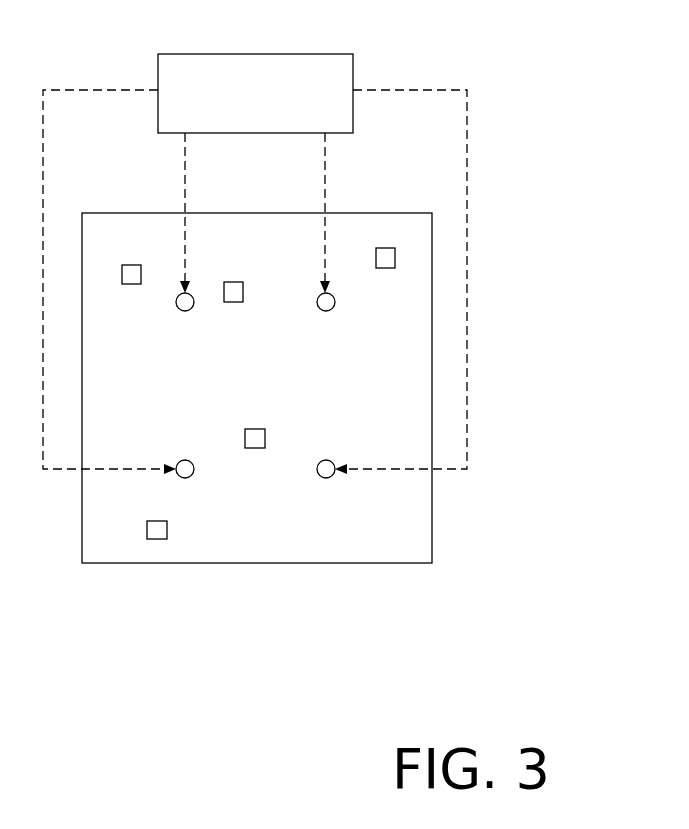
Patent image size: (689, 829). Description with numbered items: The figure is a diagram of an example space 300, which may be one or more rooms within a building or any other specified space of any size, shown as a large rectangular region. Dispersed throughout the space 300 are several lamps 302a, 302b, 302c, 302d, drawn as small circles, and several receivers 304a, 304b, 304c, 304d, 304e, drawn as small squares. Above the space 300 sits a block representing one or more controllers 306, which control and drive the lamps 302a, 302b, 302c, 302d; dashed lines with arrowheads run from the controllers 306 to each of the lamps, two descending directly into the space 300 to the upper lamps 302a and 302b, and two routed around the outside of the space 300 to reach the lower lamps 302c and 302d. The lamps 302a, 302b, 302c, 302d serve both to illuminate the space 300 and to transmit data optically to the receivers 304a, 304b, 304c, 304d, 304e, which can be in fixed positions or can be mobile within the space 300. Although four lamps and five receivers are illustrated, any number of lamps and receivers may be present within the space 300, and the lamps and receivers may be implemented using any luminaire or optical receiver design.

The space 300 is at (363, 563).
The lamp 302a is at (187, 311).
The lamp 302b is at (332, 310).
The lamp 302c is at (183, 460).
The lamp 302d is at (330, 461).
The receiver 304a is at (140, 265).
The receiver 304b is at (259, 265).
The receiver 304c is at (394, 248).
The receiver 304d is at (264, 430).
The receiver 304e is at (148, 539).
The controller 306 is at (323, 54).